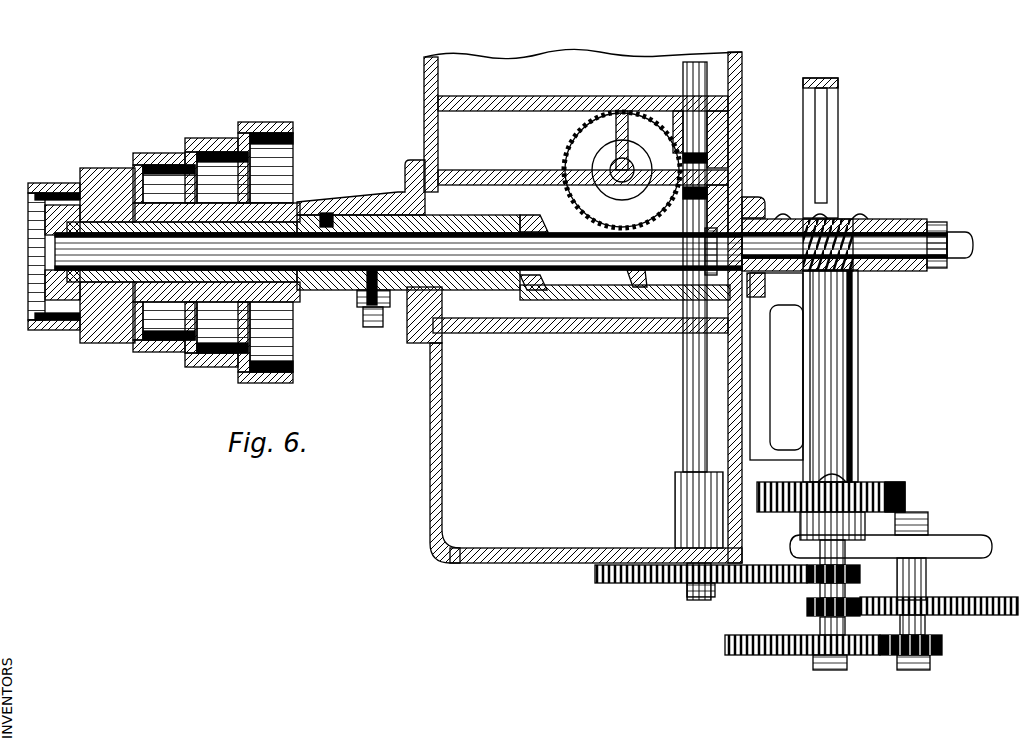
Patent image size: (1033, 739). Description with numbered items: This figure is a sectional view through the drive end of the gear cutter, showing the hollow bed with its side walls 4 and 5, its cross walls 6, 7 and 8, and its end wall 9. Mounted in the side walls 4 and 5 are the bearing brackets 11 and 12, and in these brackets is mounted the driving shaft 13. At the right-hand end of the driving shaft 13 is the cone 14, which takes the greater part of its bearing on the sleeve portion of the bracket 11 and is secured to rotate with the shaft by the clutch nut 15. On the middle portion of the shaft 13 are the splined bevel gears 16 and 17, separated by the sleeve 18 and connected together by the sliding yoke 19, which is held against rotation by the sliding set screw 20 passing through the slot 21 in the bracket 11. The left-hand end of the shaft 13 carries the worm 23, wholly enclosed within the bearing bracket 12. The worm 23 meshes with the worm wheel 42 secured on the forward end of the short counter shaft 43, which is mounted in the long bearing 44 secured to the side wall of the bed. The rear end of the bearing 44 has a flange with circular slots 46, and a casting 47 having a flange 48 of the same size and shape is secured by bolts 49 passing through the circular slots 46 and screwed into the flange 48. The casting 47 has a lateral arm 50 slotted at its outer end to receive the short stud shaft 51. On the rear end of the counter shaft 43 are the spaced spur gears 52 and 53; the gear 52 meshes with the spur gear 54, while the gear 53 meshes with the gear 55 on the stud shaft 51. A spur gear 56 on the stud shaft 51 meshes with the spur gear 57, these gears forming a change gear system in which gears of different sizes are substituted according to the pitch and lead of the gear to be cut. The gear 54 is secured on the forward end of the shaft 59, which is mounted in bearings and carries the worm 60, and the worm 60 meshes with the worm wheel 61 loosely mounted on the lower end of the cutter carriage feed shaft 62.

The side wall 4 is at (442, 406).
The side wall 5 is at (728, 386).
The cross wall 6 is at (578, 333).
The cross wall 7 is at (494, 172).
The cross wall 8 is at (499, 96).
The end wall 9 is at (553, 548).
The bearing bracket 11 is at (356, 202).
The bearing bracket 12 is at (762, 199).
The driving shaft 13 is at (596, 270).
The cone 14 is at (116, 338).
The clutch nut 15 is at (45, 290).
The splined bevel gear 16 is at (540, 212).
The splined bevel gear 17 is at (628, 283).
The sleeve 18 is at (540, 286).
The sliding yoke 19 is at (473, 290).
The sliding set screw 20 is at (378, 323).
The slot 21 is at (362, 300).
The worm 23 is at (851, 216).
The worm wheel 42 is at (858, 262).
The counter shaft 43 is at (842, 381).
The long bearing 44 is at (858, 433).
The circular slots 46 is at (886, 482).
The casting 47 is at (818, 541).
The flange 48 is at (800, 522).
The bolts 49 is at (832, 474).
The lateral arm 50 is at (951, 539).
The stud shaft 51 is at (926, 581).
The spur gear 52 is at (860, 573).
The spur gear 53 is at (807, 608).
The spur gear 54 is at (633, 583).
The gear 55 is at (985, 597).
The spur gear 56 is at (942, 647).
The spur gear 57 is at (725, 641).
The shaft 59 is at (683, 410).
The worm 60 is at (707, 156).
The worm wheel 61 is at (622, 170).
The cutter carriage feed shaft 62 is at (620, 160).